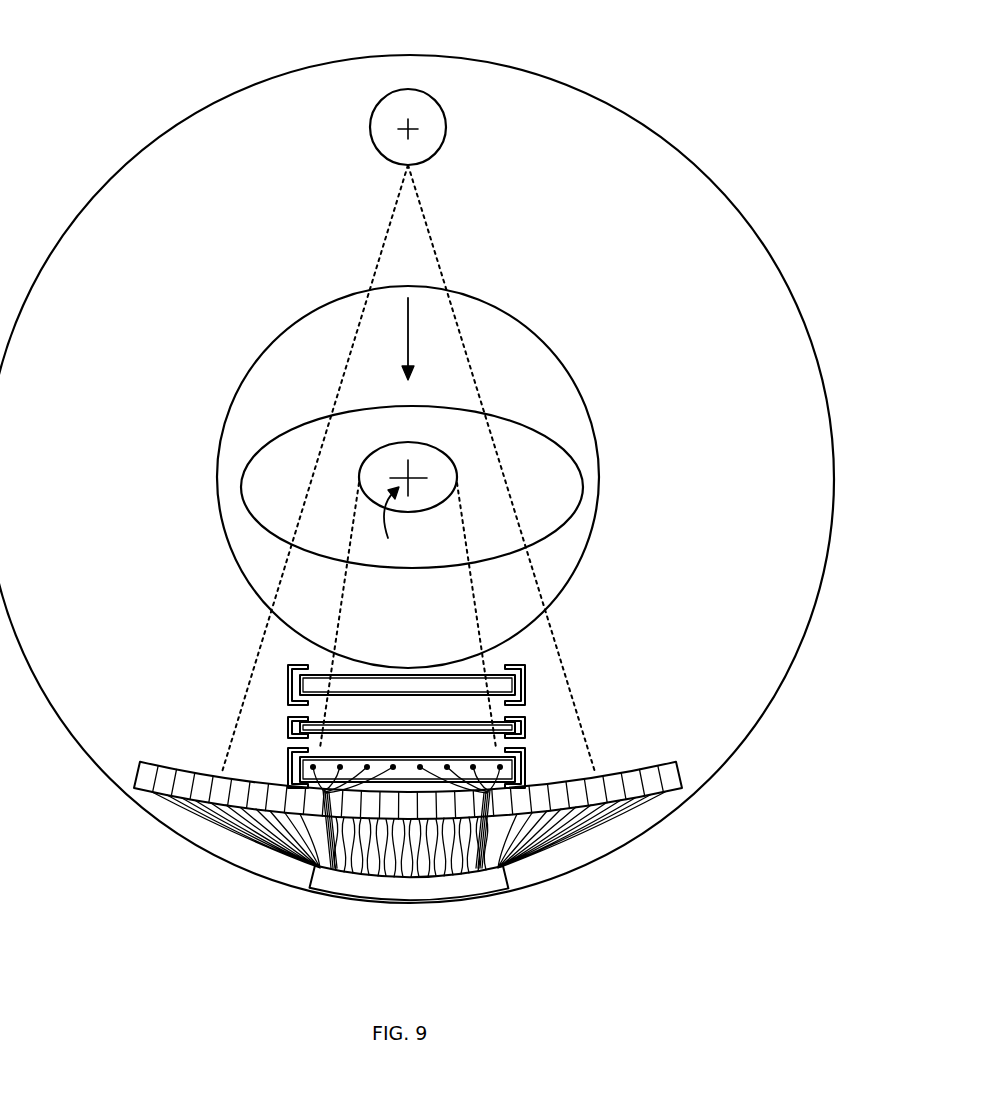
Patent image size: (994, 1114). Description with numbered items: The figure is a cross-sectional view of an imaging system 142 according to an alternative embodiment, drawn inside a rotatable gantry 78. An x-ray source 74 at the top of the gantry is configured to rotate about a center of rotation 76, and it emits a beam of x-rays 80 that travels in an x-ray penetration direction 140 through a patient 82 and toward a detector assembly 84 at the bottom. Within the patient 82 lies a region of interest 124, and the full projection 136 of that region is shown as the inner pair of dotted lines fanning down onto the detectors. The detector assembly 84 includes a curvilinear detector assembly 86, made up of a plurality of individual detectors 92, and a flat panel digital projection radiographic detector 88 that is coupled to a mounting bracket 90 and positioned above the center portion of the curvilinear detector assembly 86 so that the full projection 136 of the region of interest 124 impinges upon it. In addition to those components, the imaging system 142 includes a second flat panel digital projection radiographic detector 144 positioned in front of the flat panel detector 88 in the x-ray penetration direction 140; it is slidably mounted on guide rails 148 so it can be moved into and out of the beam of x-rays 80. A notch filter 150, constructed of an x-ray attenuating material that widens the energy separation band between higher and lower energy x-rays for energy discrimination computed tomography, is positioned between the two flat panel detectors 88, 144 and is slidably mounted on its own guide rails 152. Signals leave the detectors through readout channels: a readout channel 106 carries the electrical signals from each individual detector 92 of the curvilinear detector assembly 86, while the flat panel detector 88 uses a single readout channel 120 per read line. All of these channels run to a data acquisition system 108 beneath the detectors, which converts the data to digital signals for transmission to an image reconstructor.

The imaging system 142 is at (62, 90).
The rotatable gantry 78 is at (633, 112).
The x-ray source 74 is at (443, 143).
The beam of x-rays 80 is at (435, 240).
The full projection 136 is at (475, 596).
The x-ray penetration direction 140 is at (408, 318).
The patient 82 is at (500, 416).
The region of interest 124 is at (428, 444).
The center of rotation 76 is at (394, 524).
The detector assembly 84 is at (224, 731).
The second flat panel digital projection radiographic detector 144 is at (405, 695).
The guide rails 148 is at (290, 690).
The notch filter 150 is at (352, 722).
The guide rails 152 is at (290, 735).
The flat panel digital projection radiographic detector 88 is at (345, 758).
The mounting bracket 90 is at (292, 770).
The curvilinear detector assembly 86 is at (407, 774).
The individual detectors 92 is at (198, 772).
The readout channel 106 is at (215, 822).
The readout channel 120 is at (425, 826).
The data acquisition system 108 is at (465, 900).